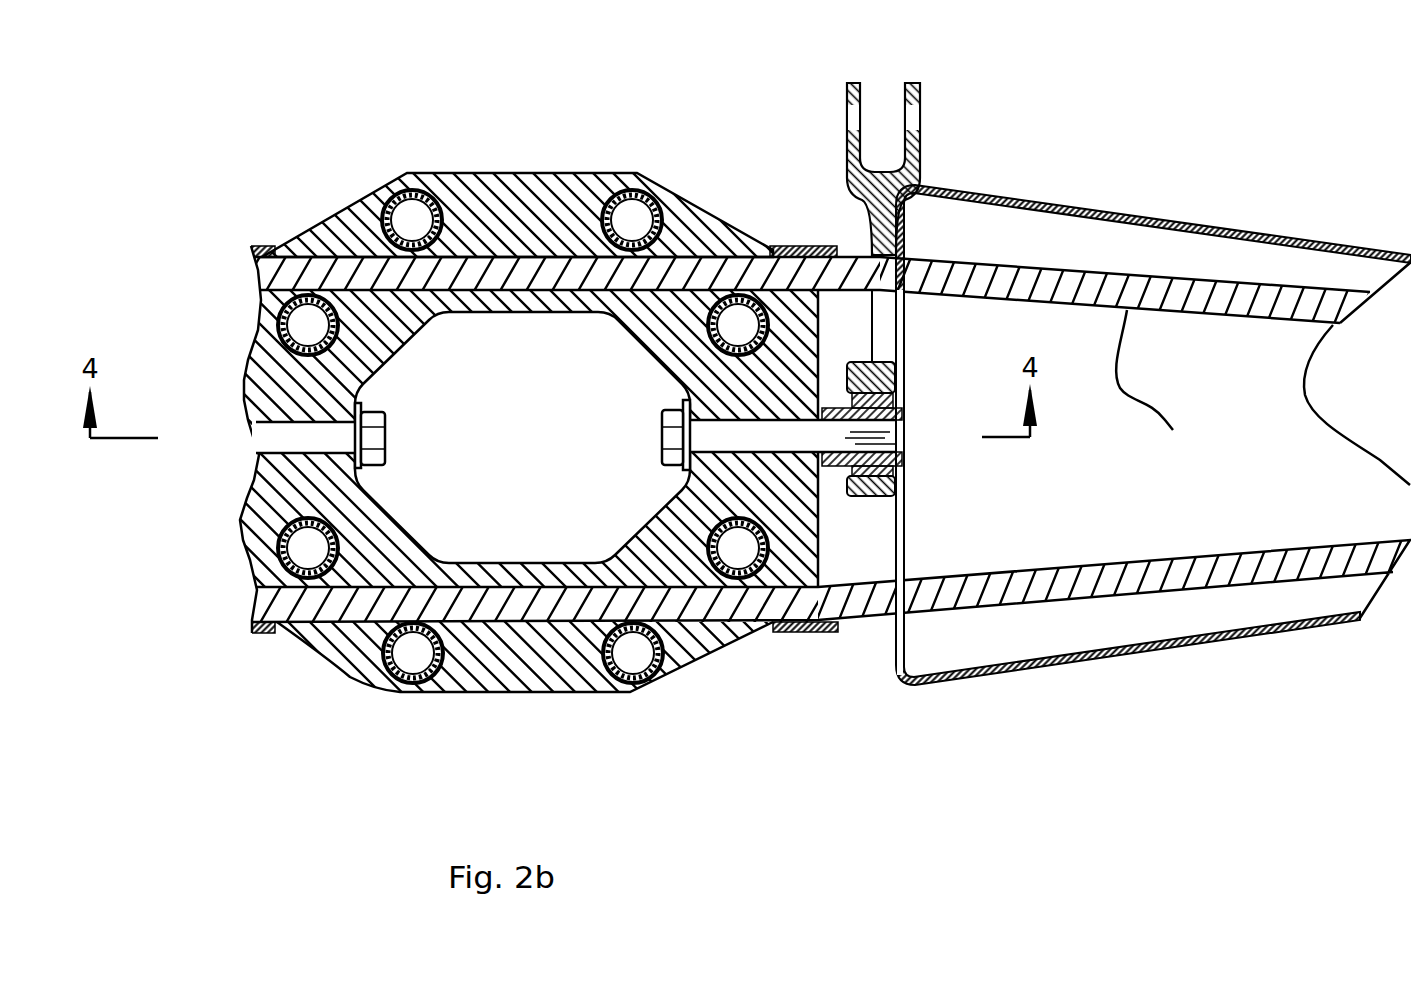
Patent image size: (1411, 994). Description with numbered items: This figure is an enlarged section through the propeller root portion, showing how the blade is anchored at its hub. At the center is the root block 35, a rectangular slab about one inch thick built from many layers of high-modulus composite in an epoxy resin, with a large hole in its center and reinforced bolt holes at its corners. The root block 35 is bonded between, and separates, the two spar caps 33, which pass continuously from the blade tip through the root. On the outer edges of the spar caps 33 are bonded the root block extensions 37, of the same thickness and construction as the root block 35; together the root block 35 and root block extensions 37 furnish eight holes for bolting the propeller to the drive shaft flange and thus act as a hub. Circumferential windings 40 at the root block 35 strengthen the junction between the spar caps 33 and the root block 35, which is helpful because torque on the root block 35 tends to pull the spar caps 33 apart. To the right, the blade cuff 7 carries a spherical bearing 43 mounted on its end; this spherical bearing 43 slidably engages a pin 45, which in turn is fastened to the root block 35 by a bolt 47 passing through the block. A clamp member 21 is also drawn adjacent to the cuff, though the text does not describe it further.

The blade cuff 7 is at (1150, 210).
The clamp bracket 21 is at (847, 156).
The spar caps 33 is at (1100, 563).
The root block 35 is at (677, 545).
The root block extensions 37 is at (495, 222).
The circumferential windings 40 is at (253, 634).
The spherical bearing 43 is at (903, 400).
The pin 45 is at (827, 467).
The bolt 47 is at (661, 438).